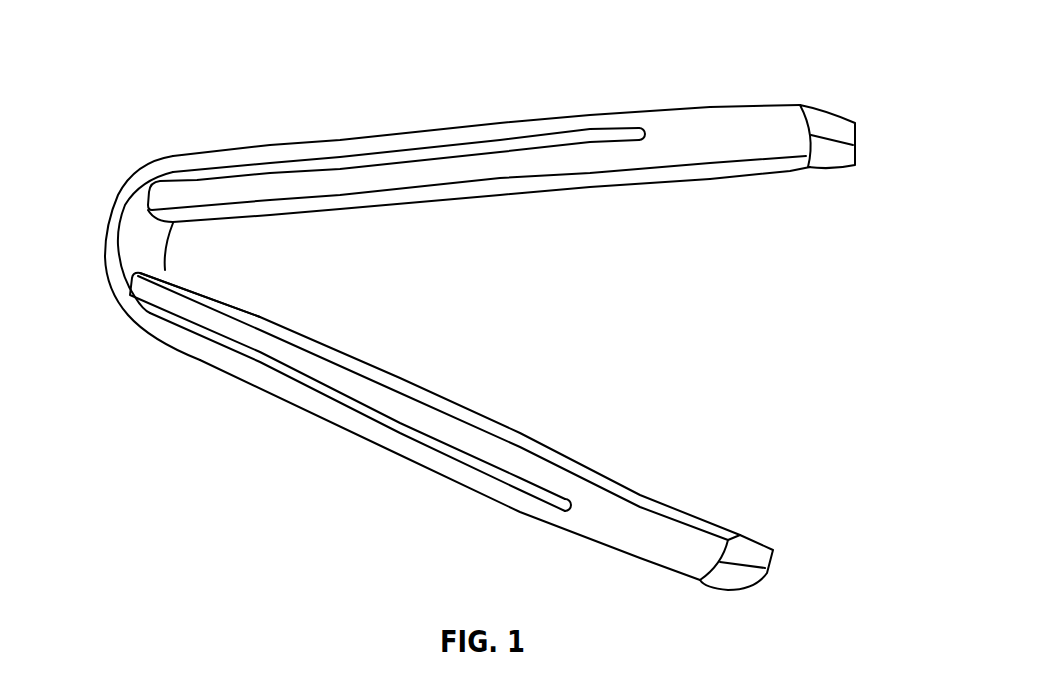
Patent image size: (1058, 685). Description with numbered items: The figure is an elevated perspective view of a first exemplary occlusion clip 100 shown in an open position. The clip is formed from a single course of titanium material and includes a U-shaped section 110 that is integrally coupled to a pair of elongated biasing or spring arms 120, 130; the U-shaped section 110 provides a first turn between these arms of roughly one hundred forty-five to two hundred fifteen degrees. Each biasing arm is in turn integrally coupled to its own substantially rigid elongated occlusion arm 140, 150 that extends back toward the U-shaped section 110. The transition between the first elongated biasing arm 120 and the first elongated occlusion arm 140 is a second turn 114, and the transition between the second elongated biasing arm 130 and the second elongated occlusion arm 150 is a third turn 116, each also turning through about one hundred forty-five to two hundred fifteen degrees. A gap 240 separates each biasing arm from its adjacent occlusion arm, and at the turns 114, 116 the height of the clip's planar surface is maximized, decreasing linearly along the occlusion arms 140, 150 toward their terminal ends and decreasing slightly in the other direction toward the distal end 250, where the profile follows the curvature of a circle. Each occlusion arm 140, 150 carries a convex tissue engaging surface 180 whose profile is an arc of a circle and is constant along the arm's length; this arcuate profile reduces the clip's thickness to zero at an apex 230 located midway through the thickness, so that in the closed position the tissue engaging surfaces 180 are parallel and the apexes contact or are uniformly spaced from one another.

The occlusion clip 100 is at (842, 50).
The U-shaped section 110 is at (110, 218).
The second turn 114 is at (645, 132).
The third turn 116 is at (574, 510).
The first elongated biasing arm 120 is at (309, 150).
The second elongated biasing arm 130 is at (347, 418).
The first elongated occlusion arm 140 is at (317, 183).
The second elongated occlusion arm 150 is at (341, 378).
The tissue engaging surface 180 is at (633, 176).
The apex 230 is at (793, 167).
The gap 240 is at (462, 146).
The distal end 250 is at (843, 128).